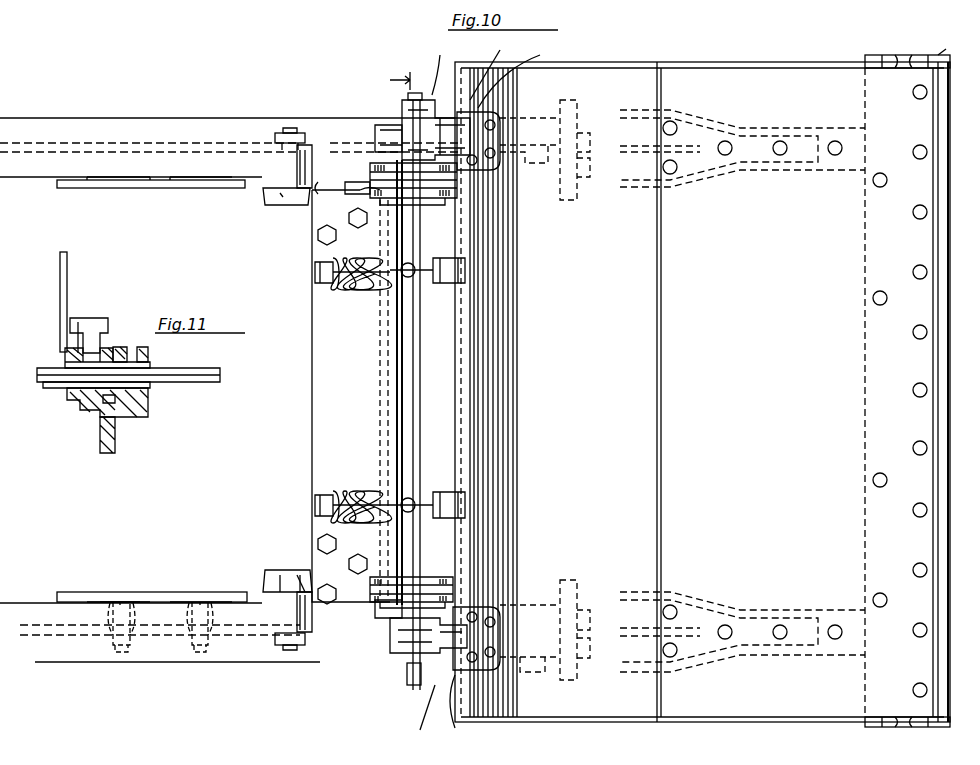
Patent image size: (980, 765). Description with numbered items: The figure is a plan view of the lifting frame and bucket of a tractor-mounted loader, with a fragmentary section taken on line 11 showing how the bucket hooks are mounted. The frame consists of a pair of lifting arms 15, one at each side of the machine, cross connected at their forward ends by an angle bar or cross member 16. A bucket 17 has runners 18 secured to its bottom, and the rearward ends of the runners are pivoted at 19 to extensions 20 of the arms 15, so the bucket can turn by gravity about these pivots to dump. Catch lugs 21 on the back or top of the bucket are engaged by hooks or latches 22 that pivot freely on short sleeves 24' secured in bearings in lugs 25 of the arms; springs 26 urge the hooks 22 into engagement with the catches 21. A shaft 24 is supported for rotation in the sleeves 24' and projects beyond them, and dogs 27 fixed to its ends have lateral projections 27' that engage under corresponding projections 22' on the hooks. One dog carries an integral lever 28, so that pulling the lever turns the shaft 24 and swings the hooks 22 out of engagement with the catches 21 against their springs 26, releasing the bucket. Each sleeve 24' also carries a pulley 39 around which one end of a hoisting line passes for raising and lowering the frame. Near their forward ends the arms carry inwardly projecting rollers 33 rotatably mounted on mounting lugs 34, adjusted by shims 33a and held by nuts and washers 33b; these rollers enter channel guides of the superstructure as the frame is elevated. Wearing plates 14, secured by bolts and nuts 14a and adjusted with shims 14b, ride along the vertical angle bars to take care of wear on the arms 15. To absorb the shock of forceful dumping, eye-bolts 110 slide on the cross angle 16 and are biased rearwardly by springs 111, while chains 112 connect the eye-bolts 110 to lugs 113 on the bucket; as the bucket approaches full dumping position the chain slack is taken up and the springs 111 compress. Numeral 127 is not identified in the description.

In FIG. 10, the door frame 11 is at (401, 76).
In FIG. 10, the wearing plate 14 is at (200, 188).
In FIG. 10, the bolts and nuts 14a is at (110, 655).
In FIG. 10, the shims 14b is at (105, 600).
In FIG. 10, the lifting arm 15 is at (165, 685).
In FIG. 10, the angle bar or cross member 16 is at (328, 413).
In FIG. 10, the bucket 17 is at (796, 423).
In FIG. 10, the runner 18 is at (735, 168).
In FIG. 10, the pivot 19 is at (575, 190).
In FIG. 10, the extension 20 is at (515, 175).
In FIG. 10, the catch lug 21 is at (495, 115).
In FIG. 10, the hook or latch 22 is at (409, 402).
In FIG. 11, the hook or latch 22 is at (76, 356).
In FIG. 10, the projection 22' is at (405, 378).
In FIG. 11, the projection 22' is at (89, 314).
In FIG. 10, the shaft 24 is at (384, 395).
In FIG. 11, the shaft 24 is at (144, 364).
In FIG. 11, the short sleeve 24' is at (127, 441).
In FIG. 10, the lug 25 is at (365, 115).
In FIG. 11, the lug 25 is at (145, 346).
In FIG. 10, the spring 26 is at (375, 138).
In FIG. 11, the spring 26 is at (105, 405).
In FIG. 10, the dog 27 is at (436, 393).
In FIG. 10, the lateral projection 27' is at (487, 393).
In FIG. 11, the lateral projection 27' is at (40, 334).
In FIG. 10, the lever 28 is at (519, 71).
In FIG. 10, the roller 33 is at (278, 205).
In FIG. 10, the shims 33a is at (298, 572).
In FIG. 10, the nuts and washers 33b is at (288, 128).
In FIG. 10, the mounting lug 34 is at (285, 388).
In FIG. 10, the pulley 39 is at (438, 200).
In FIG. 11, the pulley 39 is at (144, 398).
In FIG. 10, the eye-bolt 110 is at (392, 290).
In FIG. 10, the spring 111 is at (315, 280).
In FIG. 10, the chain 112 is at (415, 278).
In FIG. 10, the lug 113 is at (468, 270).
In FIG. 11, the post 127 is at (67, 268).